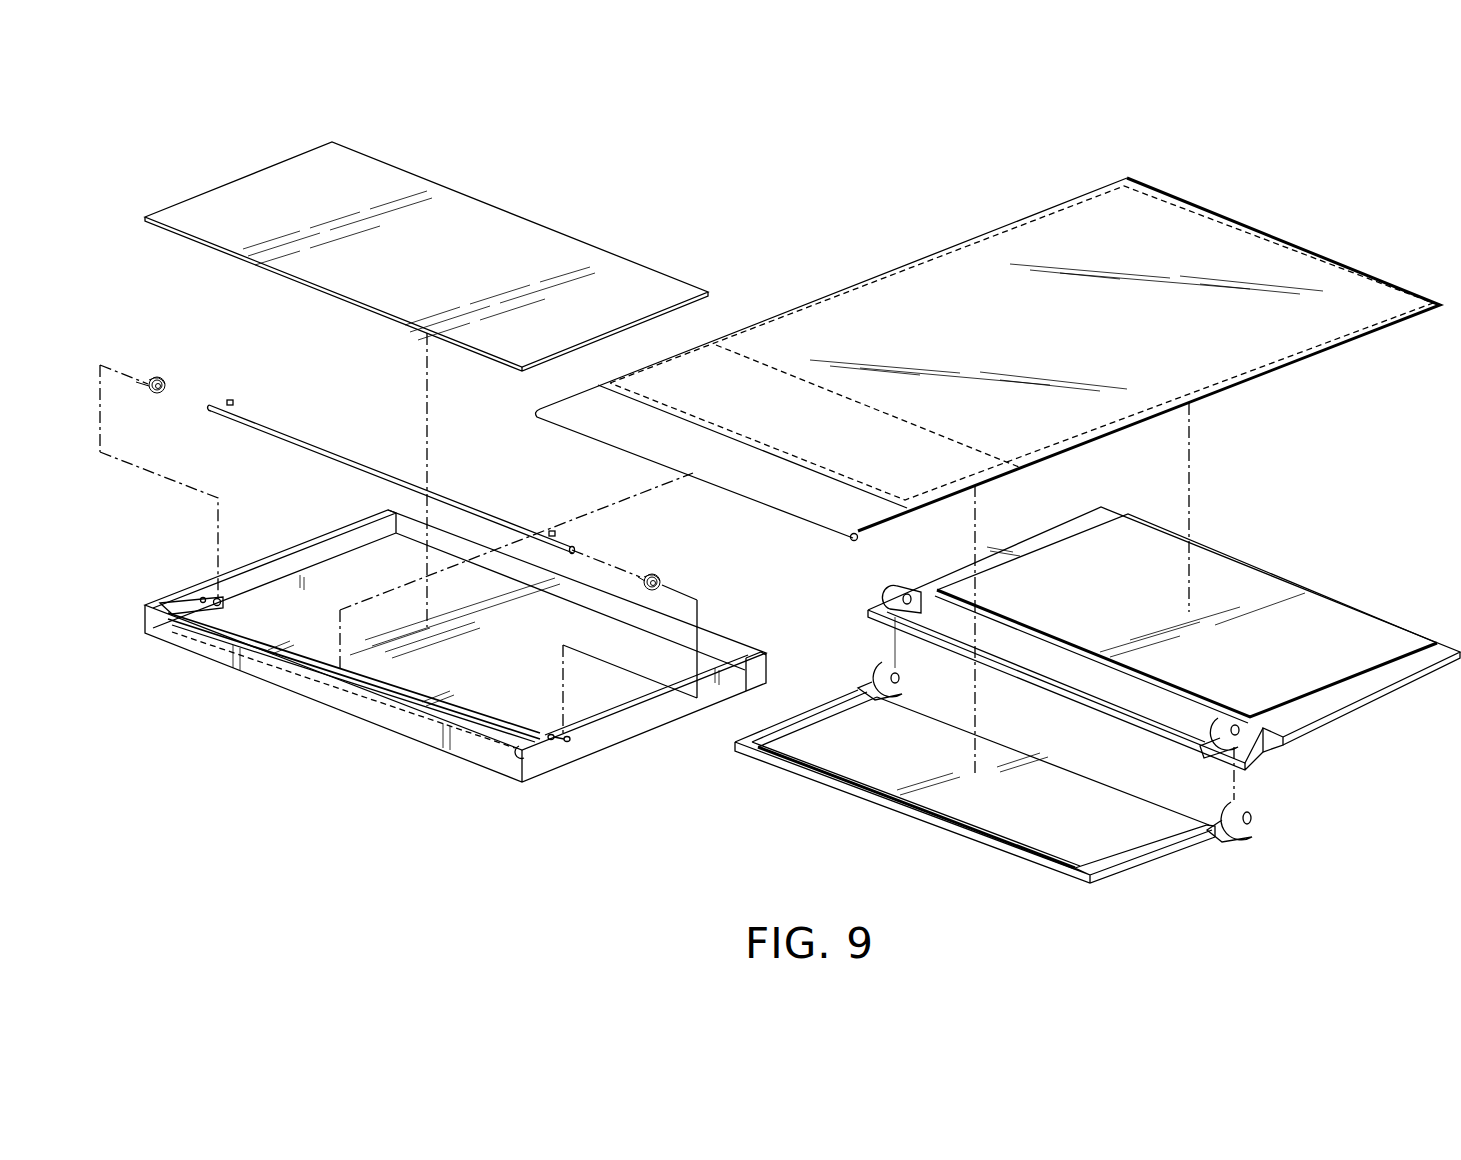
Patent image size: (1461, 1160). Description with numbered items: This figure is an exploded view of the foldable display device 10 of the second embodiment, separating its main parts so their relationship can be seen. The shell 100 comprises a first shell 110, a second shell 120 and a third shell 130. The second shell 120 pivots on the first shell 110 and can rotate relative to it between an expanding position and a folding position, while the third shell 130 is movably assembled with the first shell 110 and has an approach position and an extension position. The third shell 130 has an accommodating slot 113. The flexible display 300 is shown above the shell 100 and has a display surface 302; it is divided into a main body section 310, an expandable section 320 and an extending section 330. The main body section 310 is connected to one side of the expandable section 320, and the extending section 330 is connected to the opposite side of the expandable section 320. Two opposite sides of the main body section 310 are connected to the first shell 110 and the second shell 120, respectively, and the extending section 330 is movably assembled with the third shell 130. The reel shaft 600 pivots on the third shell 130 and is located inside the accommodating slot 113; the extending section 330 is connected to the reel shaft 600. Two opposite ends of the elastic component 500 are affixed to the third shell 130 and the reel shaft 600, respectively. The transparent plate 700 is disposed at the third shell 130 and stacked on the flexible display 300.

The foldable display device 10 is at (920, 124).
The shell 100 is at (1097, 710).
The first shell 110 is at (1187, 854).
The accommodating slot 113 is at (323, 586).
The second shell 120 is at (1361, 707).
The third shell 130 is at (325, 693).
The flexible display 300 is at (988, 360).
The display surface 302 is at (1078, 200).
The main body section 310 is at (1005, 330).
The expandable section 320 is at (787, 411).
The extending section 330 is at (835, 505).
The elastic component 500 is at (157, 376).
The reel shaft 600 is at (326, 452).
The transparent plate 700 is at (462, 240).